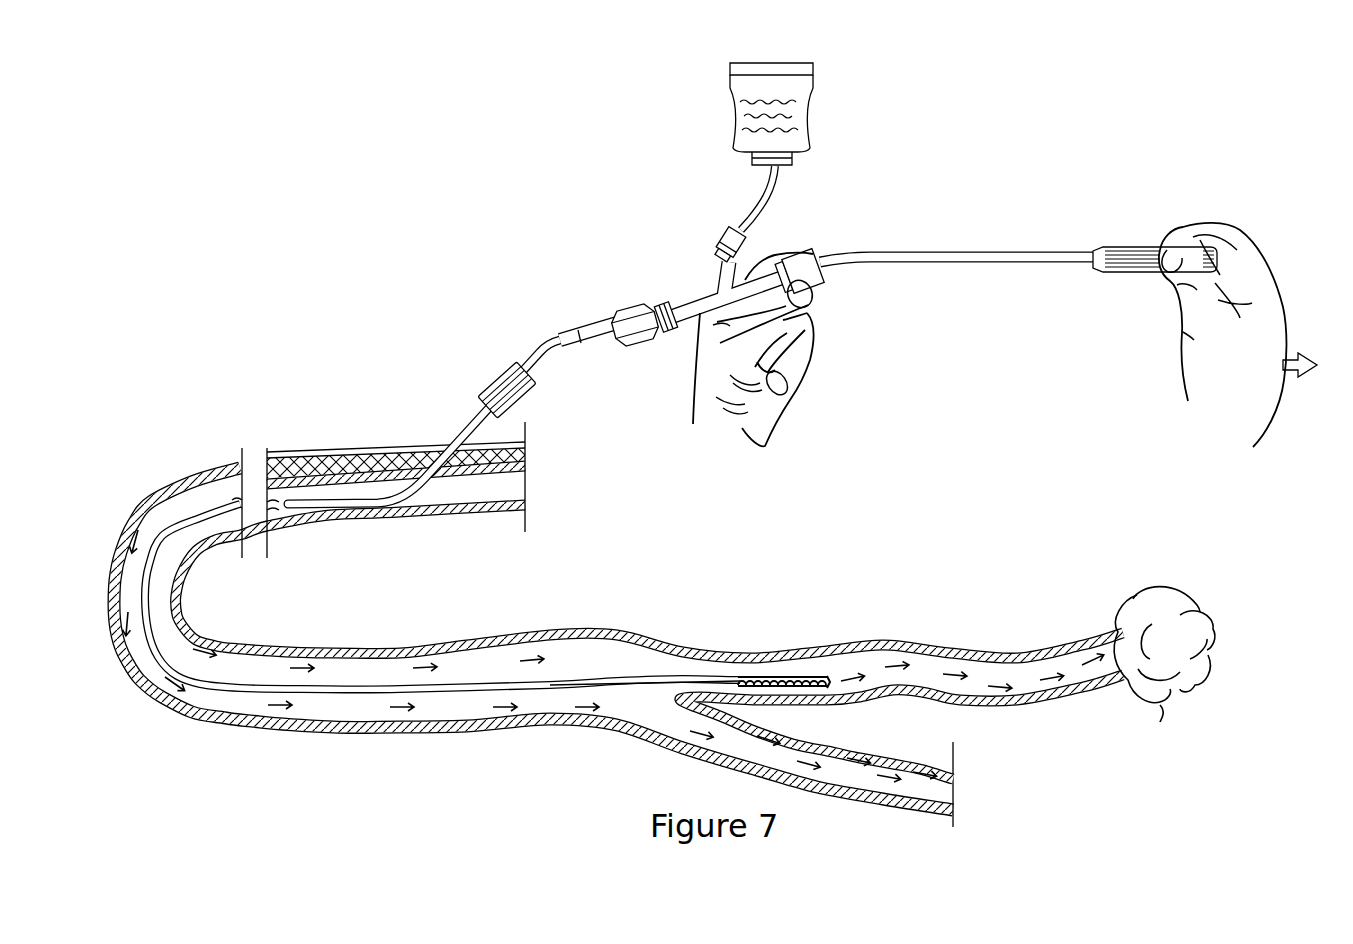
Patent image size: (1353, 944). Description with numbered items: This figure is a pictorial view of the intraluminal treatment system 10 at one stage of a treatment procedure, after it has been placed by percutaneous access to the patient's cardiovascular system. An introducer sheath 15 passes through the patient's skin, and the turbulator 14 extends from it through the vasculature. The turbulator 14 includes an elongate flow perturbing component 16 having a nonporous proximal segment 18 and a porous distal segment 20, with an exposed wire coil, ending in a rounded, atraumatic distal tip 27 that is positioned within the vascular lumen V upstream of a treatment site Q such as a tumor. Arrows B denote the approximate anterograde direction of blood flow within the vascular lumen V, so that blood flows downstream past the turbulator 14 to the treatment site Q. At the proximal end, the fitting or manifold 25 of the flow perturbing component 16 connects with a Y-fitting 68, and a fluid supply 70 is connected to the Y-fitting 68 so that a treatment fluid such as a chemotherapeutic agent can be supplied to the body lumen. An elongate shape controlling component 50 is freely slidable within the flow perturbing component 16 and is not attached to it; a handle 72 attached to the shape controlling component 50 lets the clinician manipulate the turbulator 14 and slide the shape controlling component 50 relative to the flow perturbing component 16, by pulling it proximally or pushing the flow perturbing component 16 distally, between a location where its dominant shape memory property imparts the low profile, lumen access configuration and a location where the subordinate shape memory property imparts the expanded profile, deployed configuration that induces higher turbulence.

The intraluminal treatment system 10 is at (998, 162).
The turbulator 14 is at (539, 344).
The introducer sheath 15 is at (500, 371).
The elongate flow perturbing component 16 is at (572, 348).
The nonporous proximal segment 18 is at (605, 690).
The porous distal segment 20 is at (784, 674).
The fitting or manifold 25 is at (633, 307).
The distal tip 27 is at (830, 684).
The elongate shape controlling component 50 is at (932, 265).
The Y-fitting 68 is at (667, 324).
The fluid supply 70 is at (812, 128).
The handle 72 is at (1117, 246).
The vascular lumen V is at (646, 640).
The arrows denoting anterograde direction of blood flow B is at (954, 664).
The treatment site Q is at (1163, 706).